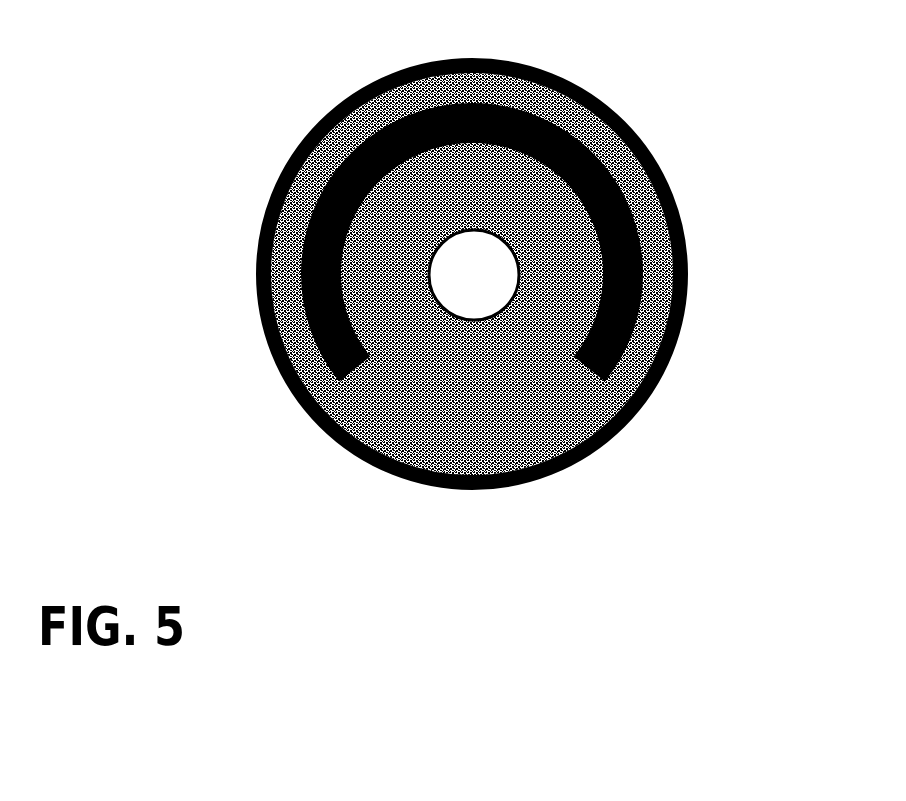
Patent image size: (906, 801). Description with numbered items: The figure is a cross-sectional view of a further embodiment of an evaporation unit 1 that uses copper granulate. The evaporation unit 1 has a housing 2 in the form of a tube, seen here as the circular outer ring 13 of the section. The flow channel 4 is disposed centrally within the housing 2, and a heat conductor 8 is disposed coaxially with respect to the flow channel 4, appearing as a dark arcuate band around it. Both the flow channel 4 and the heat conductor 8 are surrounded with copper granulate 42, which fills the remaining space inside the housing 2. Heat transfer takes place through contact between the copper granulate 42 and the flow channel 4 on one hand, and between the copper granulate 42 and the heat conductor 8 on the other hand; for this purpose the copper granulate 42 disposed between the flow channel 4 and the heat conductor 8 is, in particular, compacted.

The evaporation unit 1 is at (461, 328).
The housing 2 is at (270, 202).
The flow channel 4 is at (474, 288).
The heat conductor 8 is at (647, 286).
The outer rim 13 is at (652, 135).
The copper granulate 42 is at (378, 417).